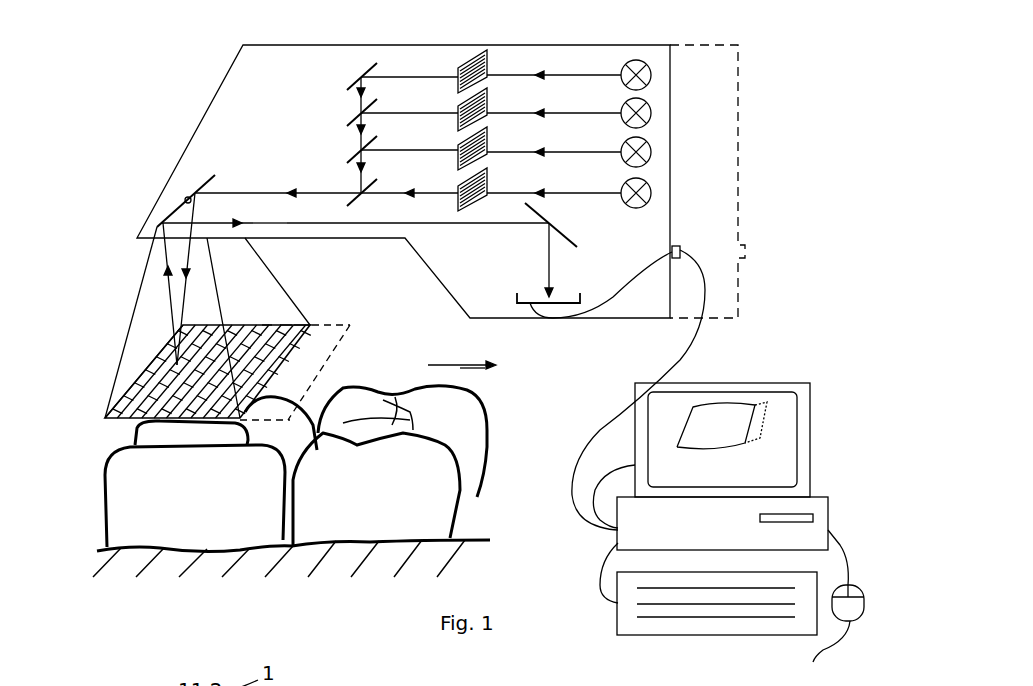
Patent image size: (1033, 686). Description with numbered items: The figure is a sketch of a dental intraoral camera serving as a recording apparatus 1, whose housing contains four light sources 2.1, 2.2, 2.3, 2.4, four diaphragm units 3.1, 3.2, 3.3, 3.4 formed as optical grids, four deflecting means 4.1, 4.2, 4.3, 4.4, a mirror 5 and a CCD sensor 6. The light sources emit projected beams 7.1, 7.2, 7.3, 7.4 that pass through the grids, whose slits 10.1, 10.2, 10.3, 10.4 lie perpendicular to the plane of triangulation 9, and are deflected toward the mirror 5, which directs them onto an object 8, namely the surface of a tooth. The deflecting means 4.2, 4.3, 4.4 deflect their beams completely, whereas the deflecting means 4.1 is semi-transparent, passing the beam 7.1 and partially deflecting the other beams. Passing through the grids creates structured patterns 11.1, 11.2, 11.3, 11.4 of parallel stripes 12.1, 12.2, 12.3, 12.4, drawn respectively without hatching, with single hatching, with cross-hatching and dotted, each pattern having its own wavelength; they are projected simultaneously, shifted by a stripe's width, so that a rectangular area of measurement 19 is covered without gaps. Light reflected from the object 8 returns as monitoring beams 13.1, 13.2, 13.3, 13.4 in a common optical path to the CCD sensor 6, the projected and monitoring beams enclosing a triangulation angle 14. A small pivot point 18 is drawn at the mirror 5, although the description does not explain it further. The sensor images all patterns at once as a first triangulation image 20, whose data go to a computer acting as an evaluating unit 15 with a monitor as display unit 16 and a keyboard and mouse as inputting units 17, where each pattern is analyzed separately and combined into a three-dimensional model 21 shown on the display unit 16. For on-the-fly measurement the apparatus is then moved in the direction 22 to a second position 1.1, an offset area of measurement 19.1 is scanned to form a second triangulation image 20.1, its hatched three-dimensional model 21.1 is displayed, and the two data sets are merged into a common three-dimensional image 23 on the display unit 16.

The recording apparatus 1 is at (670, 46).
The second position 1.1 is at (738, 46).
The light source 2.1 is at (650, 180).
The light source 2.2 is at (650, 140).
The light source 2.3 is at (650, 100).
The light source 2.4 is at (630, 60).
The diaphragm unit 3.1 is at (480, 172).
The diaphragm unit 3.2 is at (480, 131).
The diaphragm unit 3.3 is at (480, 92).
The diaphragm unit 3.4 is at (467, 63).
The deflecting means 4.1 is at (350, 193).
The deflecting means 4.2 is at (358, 151).
The deflecting means 4.3 is at (358, 114).
The deflecting means 4.4 is at (358, 78).
The mirror 5 is at (213, 176).
The CCD sensor 6 is at (530, 305).
The projected beam 7.1 is at (597, 200).
The projected beam 7.2 is at (562, 155).
The projected beam 7.3 is at (562, 115).
The projected beam 7.4 is at (562, 77).
The object 8 is at (257, 400).
The plane of triangulation 9 is at (183, 290).
The slit 10.1 is at (457, 193).
The slit 10.2 is at (457, 150).
The slit 10.3 is at (457, 112).
The slit 10.4 is at (457, 74).
The first pattern 11.1 is at (112, 410).
The second pattern 11.2 is at (120, 386).
The third pattern 11.3 is at (122, 362).
The fourth pattern 11.4 is at (218, 322).
The parallel stripes 12.1 is at (272, 323).
The parallel stripes 12.2 is at (288, 323).
The parallel stripes 12.3 is at (295, 323).
The parallel stripes 12.4 is at (322, 324).
The monitoring beam 13.1 is at (253, 221).
The monitoring beam 13.2 is at (270, 221).
The monitoring beam 13.3 is at (287, 221).
The monitoring beam 13.4 is at (303, 221).
The triangulation angle 14 is at (168, 272).
The evaluating unit 15 is at (630, 533).
The display unit 16 is at (747, 411).
The inputting units 17 is at (829, 608).
The pivot 18 is at (185, 199).
The area of measurement 19 is at (328, 350).
The area of measurement 19.1 is at (342, 343).
The first triangulation image 20 is at (155, 340).
The second triangulation image 20.1 is at (345, 357).
The 3D model 21 is at (695, 403).
The 3D model 21.1 is at (760, 403).
The direction 22 is at (460, 368).
The common 3D image 23 is at (758, 445).